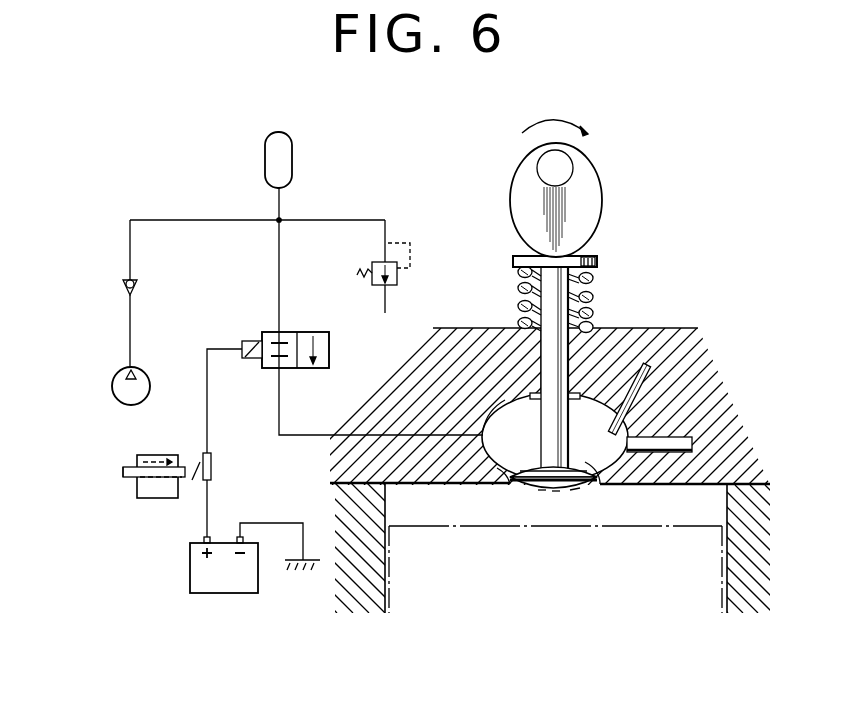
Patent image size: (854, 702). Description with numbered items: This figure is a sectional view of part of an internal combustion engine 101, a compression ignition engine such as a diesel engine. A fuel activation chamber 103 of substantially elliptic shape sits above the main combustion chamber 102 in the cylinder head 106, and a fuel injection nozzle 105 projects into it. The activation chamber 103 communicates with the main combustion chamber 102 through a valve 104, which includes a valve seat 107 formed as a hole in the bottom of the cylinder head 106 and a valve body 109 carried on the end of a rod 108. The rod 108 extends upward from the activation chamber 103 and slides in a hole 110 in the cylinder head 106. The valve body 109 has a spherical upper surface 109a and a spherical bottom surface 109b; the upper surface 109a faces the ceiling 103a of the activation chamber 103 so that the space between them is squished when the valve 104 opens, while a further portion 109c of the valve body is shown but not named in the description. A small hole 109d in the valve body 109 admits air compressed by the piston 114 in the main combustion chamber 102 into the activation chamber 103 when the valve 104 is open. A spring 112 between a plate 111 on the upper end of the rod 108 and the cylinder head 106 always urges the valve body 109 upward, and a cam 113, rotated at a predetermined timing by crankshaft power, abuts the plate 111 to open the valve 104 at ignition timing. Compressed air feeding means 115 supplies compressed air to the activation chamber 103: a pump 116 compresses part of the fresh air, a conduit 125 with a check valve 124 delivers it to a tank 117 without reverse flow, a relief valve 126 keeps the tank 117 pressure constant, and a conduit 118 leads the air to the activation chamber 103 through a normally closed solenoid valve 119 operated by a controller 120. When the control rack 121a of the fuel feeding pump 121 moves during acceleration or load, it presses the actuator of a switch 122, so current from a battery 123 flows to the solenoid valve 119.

The internal combustion engine 101 is at (645, 195).
The main combustion chamber 102 is at (455, 514).
The fuel activation chamber 103 is at (533, 442).
The ceiling 103a is at (523, 400).
The valve 104 is at (650, 362).
The fuel injection nozzle 105 is at (682, 437).
The cylinder head 106 is at (427, 392).
The valve seat 107 is at (525, 488).
The rod 108 is at (610, 328).
The valve body 109 is at (576, 433).
The upper surface 109a is at (617, 487).
The bottom surface 109b is at (558, 492).
The valve head portion 109c is at (543, 492).
The small hole 109d is at (575, 492).
The hole 110 is at (541, 345).
The plate 111 is at (588, 255).
The spring 112 is at (592, 278).
The cam 113 is at (510, 192).
The piston 114 is at (708, 526).
The compressed air feeding means 115 is at (214, 217).
The pump 116 is at (113, 396).
The tank 117 is at (292, 152).
The conduit 118 is at (279, 292).
The solenoid valve 119 is at (305, 330).
The controller 120 is at (178, 532).
The fuel feeding pump 121 is at (137, 492).
The control rack 121a is at (130, 467).
The switch 122 is at (213, 466).
The battery 123 is at (223, 597).
The check valve 124 is at (125, 290).
The conduit 125 is at (130, 245).
The relief valve 126 is at (372, 265).